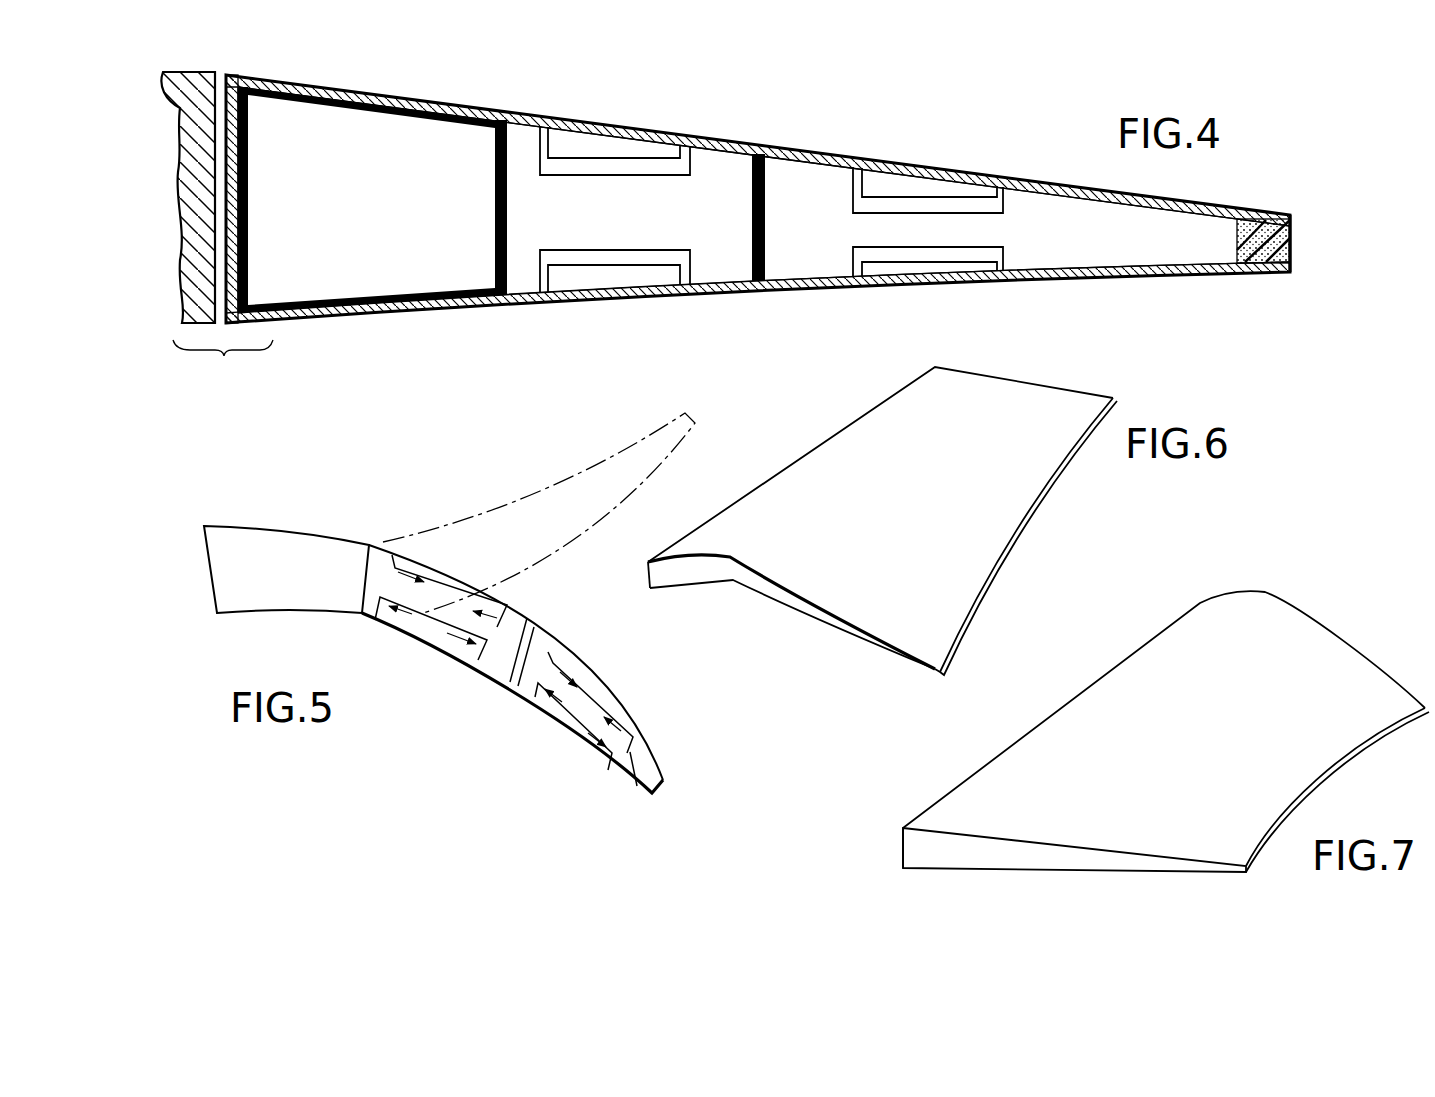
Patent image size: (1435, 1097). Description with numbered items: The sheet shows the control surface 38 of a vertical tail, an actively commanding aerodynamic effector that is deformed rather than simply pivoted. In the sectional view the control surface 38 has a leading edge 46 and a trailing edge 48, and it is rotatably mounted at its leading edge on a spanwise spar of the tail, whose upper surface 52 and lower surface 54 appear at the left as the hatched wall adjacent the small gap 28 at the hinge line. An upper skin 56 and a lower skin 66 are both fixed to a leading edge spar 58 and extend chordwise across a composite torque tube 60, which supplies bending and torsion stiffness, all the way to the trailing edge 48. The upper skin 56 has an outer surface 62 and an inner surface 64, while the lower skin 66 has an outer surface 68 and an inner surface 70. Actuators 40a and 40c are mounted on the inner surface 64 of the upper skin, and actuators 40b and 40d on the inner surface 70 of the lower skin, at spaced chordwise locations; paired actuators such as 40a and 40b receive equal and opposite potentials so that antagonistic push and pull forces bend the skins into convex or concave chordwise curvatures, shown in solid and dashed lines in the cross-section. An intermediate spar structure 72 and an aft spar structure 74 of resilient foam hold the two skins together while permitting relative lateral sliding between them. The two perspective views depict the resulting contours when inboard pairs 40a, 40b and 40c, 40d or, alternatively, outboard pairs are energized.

In FIG. 4, the gap between vane root and wall 28 is at (215, 238).
In FIG. 4, the control surface 38 is at (493, 86).
In FIG. 5, the control surface 38 is at (405, 517).
In FIG. 6, the control surface 38 is at (1050, 371).
In FIG. 7, the control surface 38 is at (1260, 578).
In FIG. 4, the actuator 40a is at (615, 163).
In FIG. 5, the actuator 40a is at (447, 596).
In FIG. 4, the actuator 40b is at (627, 256).
In FIG. 5, the actuator 40b is at (438, 639).
In FIG. 4, the actuator 40c is at (943, 207).
In FIG. 5, the actuator 40c is at (600, 697).
In FIG. 4, the actuator 40d is at (953, 253).
In FIG. 5, the actuator 40d is at (577, 727).
In FIG. 4, the leading edge 46 is at (222, 118).
In FIG. 6, the leading edge 46 is at (648, 576).
In FIG. 7, the leading edge 46 is at (903, 848).
In FIG. 4, the trailing edge 48 is at (1292, 247).
In FIG. 6, the trailing edge 48 is at (1007, 562).
In FIG. 4, the upper surface 52 is at (190, 71).
In FIG. 4, the lower surface 54 is at (186, 322).
In FIG. 4, the upper skin 56 is at (903, 163).
In FIG. 4, the leading edge spar 58 is at (236, 178).
In FIG. 4, the composite torque tube 60 is at (495, 118).
In FIG. 4, the outer surface 62 is at (678, 134).
In FIG. 4, the inner surface 64 is at (713, 148).
In FIG. 4, the lower skin 66 is at (882, 293).
In FIG. 4, the outer surface 68 is at (710, 297).
In FIG. 4, the inner surface 70 is at (725, 285).
In FIG. 4, the intermediate spar structure 72 is at (767, 177).
In FIG. 4, the aft spar structure 74 is at (1237, 235).